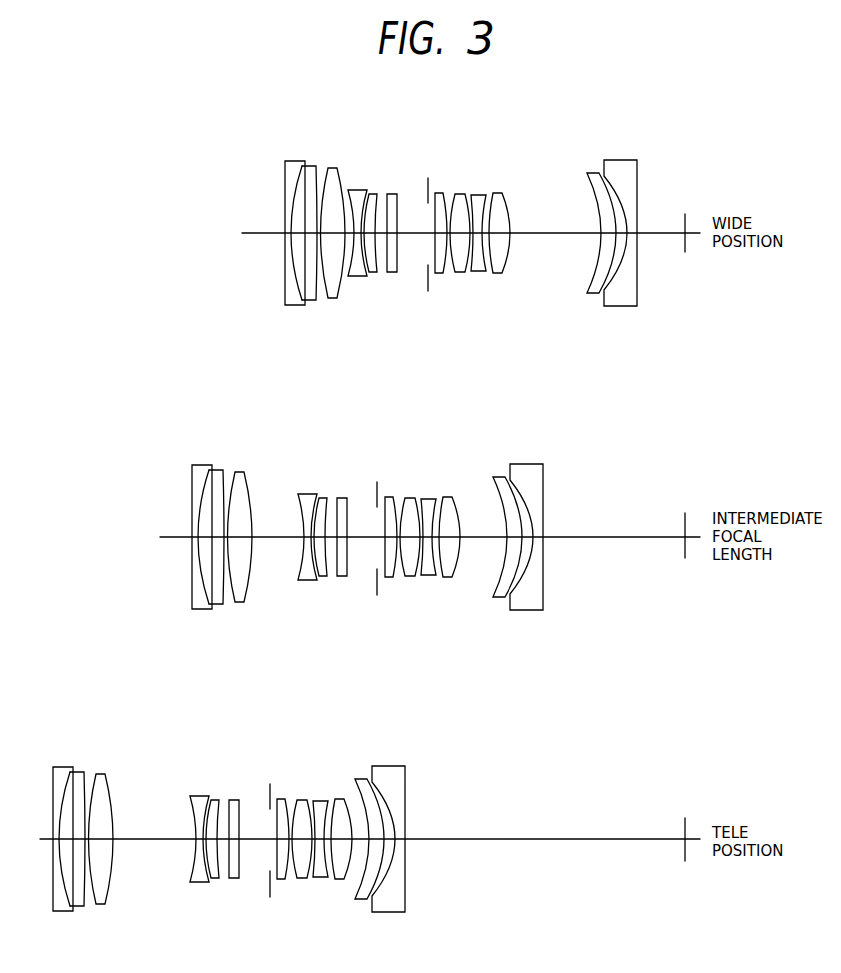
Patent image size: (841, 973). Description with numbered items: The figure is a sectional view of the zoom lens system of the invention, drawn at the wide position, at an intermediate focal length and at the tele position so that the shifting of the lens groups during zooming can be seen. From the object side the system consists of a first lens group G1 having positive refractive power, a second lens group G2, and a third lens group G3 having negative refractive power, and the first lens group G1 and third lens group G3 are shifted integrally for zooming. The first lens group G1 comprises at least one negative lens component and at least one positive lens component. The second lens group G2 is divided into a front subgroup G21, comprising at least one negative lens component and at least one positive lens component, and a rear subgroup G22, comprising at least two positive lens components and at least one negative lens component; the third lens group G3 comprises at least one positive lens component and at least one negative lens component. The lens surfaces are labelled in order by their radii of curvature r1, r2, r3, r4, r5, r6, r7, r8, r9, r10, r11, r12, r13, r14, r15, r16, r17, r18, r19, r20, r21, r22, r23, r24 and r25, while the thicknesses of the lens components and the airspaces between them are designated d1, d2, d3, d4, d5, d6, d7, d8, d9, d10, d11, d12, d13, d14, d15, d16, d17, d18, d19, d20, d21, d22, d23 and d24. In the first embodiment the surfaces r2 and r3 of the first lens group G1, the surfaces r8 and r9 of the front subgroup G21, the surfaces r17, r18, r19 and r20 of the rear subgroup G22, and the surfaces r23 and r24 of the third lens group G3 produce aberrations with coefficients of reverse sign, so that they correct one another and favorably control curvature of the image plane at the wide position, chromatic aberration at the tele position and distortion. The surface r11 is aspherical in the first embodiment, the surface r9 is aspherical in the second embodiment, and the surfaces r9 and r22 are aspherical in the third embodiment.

The first surface radius of curvature r1 is at (285, 205).
The second surface radius of curvature r2 is at (292, 200).
The third surface radius of curvature r3 is at (315, 200).
The fourth surface radius of curvature r4 is at (322, 200).
The fifth surface radius of curvature r5 is at (344, 200).
The sixth surface radius of curvature r6 is at (350, 195).
The seventh surface radius of curvature r7 is at (360, 195).
The eighth surface radius of curvature r8 is at (365, 200).
The ninth surface radius of curvature r9 is at (378, 200).
The tenth surface radius of curvature r10 is at (386, 200).
The eleventh surface radius of curvature r11 is at (397, 200).
The twelfth surface radius of curvature r12 is at (436, 200).
The thirteenth surface radius of curvature r13 is at (447, 200).
The fourteenth surface radius of curvature r14 is at (451, 200).
The fifteenth surface radius of curvature r15 is at (470, 200).
The sixteenth surface radius of curvature r16 is at (472, 200).
The seventeenth surface radius of curvature r17 is at (483, 200).
The eighteenth surface radius of curvature r18 is at (490, 200).
The nineteenth surface radius of curvature r19 is at (510, 200).
The twentieth surface radius of curvature r20 is at (505, 215).
The twenty-first surface radius of curvature r21 is at (512, 228).
The twenty-second surface radius of curvature r22 is at (590, 205).
The twenty-third surface radius of curvature r23 is at (605, 200).
The twenty-fourth surface radius of curvature r24 is at (622, 200).
The twenty-fifth surface radius of curvature r25 is at (637, 205).
The first thickness d1 is at (287, 245).
The second thickness d2 is at (293, 250).
The third thickness d3 is at (314, 255).
The fourth airspace d4 is at (320, 258).
The fifth airspace d5 is at (337, 260).
The sixth thickness d6 is at (346, 258).
The seventh thickness d7 is at (355, 260).
The eighth thickness d8 is at (363, 260).
The ninth airspace d9 is at (372, 260).
The tenth thickness d10 is at (381, 260).
The eleventh airspace d11 is at (392, 260).
The twelfth thickness d12 is at (412, 250).
The thirteenth airspace d13 is at (441, 258).
The fourteenth thickness d14 is at (449, 260).
The fifteenth airspace d15 is at (461, 258).
The sixteenth thickness d16 is at (473, 258).
The seventeenth airspace d17 is at (478, 258).
The eighteenth thickness d18 is at (487, 258).
The nineteenth thickness d19 is at (497, 260).
The twentieth thickness d20 is at (512, 245).
The twenty-first airspace d21 is at (560, 240).
The twenty-second thickness d22 is at (598, 250).
The twenty-third thickness d23 is at (620, 255).
The twenty-fourth thickness d24 is at (632, 240).
The first lens group G1 is at (257, 632).
The second lens group G2 is at (378, 578).
The front subgroup of second lens group G21 is at (336, 586).
The rear subgroup of second lens group G22 is at (422, 560).
The third lens group G3 is at (552, 632).